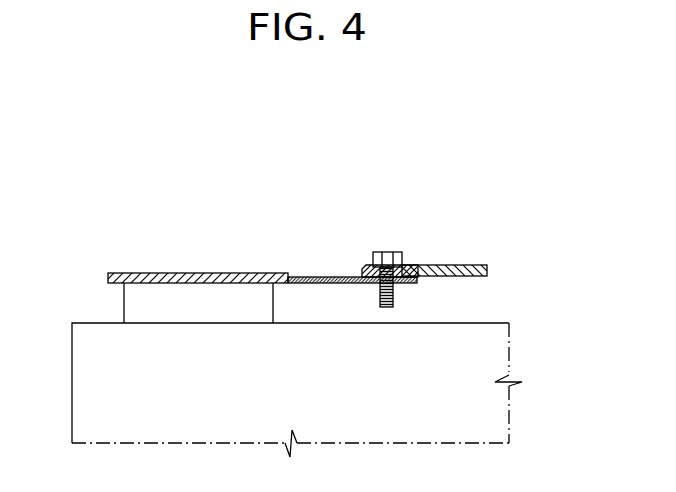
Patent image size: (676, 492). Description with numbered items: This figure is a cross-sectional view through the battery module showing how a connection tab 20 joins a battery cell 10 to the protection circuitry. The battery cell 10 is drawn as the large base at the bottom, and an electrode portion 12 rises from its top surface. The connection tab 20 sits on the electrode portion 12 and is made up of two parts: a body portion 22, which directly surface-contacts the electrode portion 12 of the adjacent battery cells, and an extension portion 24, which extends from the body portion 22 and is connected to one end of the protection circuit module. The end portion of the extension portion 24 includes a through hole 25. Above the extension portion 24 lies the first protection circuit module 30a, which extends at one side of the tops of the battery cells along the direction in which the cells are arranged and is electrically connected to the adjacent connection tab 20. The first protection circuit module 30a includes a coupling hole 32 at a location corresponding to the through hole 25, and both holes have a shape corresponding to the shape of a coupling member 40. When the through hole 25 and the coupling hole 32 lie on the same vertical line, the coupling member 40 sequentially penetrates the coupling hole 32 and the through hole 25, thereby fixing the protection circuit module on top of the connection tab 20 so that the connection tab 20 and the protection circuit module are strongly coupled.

The battery cell 10 is at (503, 413).
The electrode portion 12 is at (132, 302).
The connection tab 20 is at (261, 176).
The body portion 22 is at (190, 273).
The extension portion 24 is at (315, 277).
The through hole 25 is at (395, 284).
The coupling hole 32 is at (375, 268).
The first protection circuit module 30a is at (447, 265).
The coupling member 40 is at (406, 252).